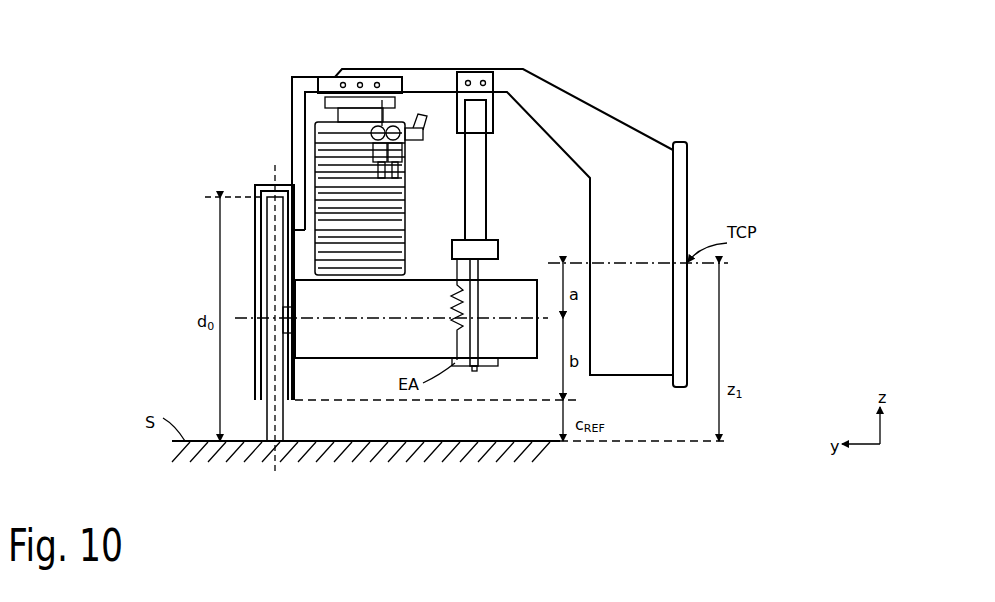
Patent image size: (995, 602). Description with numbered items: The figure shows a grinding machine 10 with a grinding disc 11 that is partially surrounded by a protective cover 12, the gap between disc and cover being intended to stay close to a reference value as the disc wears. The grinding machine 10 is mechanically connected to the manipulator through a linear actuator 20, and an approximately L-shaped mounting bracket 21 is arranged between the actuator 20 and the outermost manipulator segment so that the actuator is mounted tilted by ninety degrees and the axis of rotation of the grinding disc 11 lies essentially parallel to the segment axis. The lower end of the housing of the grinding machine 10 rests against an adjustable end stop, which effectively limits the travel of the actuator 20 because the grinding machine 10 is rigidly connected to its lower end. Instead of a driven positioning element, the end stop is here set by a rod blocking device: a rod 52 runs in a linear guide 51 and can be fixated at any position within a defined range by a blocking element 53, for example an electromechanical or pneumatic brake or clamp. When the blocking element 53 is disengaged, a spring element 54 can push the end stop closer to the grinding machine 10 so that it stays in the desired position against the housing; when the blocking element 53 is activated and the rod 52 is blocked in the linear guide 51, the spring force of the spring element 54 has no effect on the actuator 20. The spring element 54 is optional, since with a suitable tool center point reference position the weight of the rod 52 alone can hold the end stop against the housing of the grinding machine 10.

The grinding machine 10 is at (323, 280).
The grinding disc 11 is at (283, 443).
The protective cover 12 is at (255, 185).
The actuator 20 is at (403, 197).
The mounting bracket 21 is at (585, 130).
The linear guide 51 is at (477, 200).
The rod 52 is at (478, 273).
The blocking element 53 is at (490, 252).
The spring element 54 is at (452, 292).